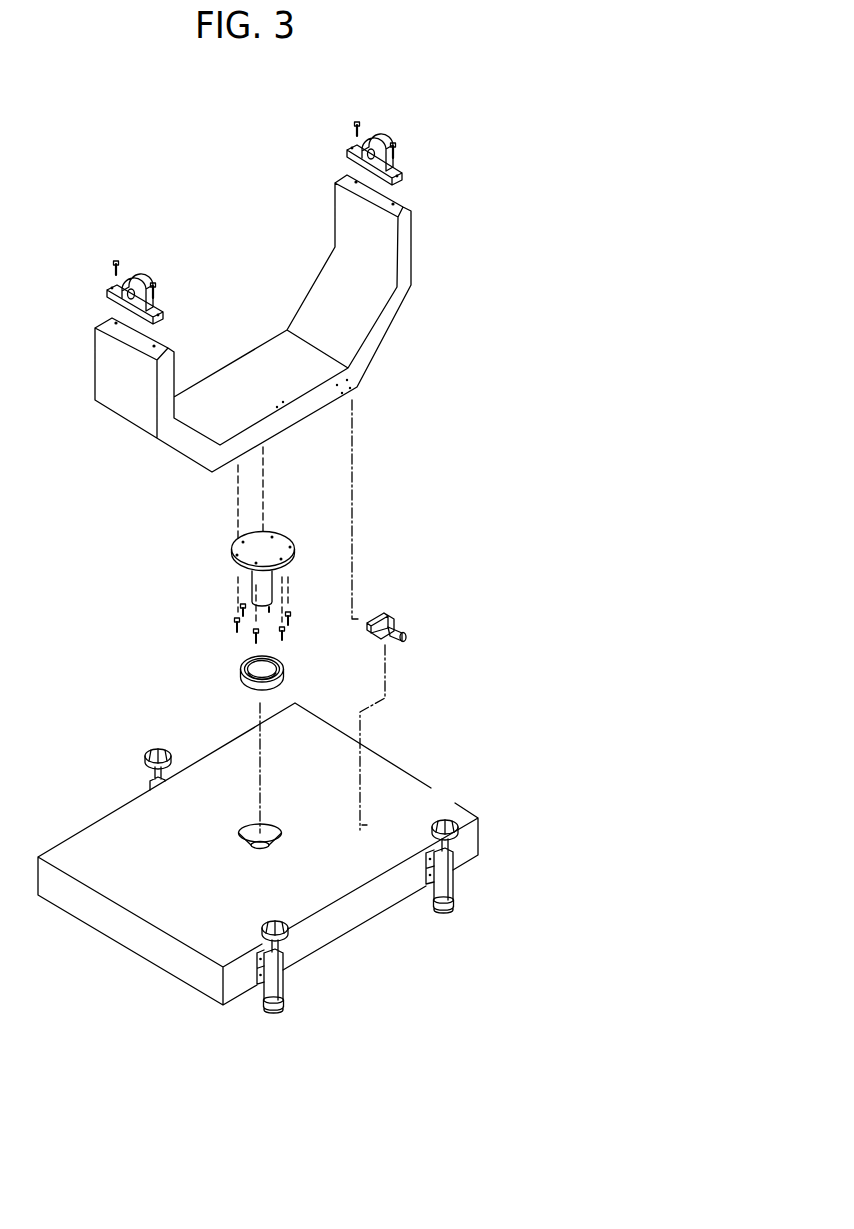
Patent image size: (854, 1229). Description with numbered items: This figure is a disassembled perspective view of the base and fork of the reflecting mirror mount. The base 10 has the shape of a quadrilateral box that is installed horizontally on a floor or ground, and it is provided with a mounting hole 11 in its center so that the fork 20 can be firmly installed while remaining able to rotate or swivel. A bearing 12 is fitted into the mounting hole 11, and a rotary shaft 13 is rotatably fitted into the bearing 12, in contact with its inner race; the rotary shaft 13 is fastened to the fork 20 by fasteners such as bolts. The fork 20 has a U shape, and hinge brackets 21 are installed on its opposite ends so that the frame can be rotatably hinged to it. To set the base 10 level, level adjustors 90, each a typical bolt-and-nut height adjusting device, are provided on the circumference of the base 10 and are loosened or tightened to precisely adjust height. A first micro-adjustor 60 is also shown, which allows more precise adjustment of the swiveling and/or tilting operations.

The base 10 is at (111, 935).
The mounting hole 11 is at (245, 828).
The bearing 12 is at (241, 667).
The rotary shaft 13 is at (236, 561).
The fork 20 is at (424, 247).
The hinge brackets 21 is at (110, 293).
The first micro-adjustor 60 is at (414, 626).
The level adjustor 90 is at (143, 752).